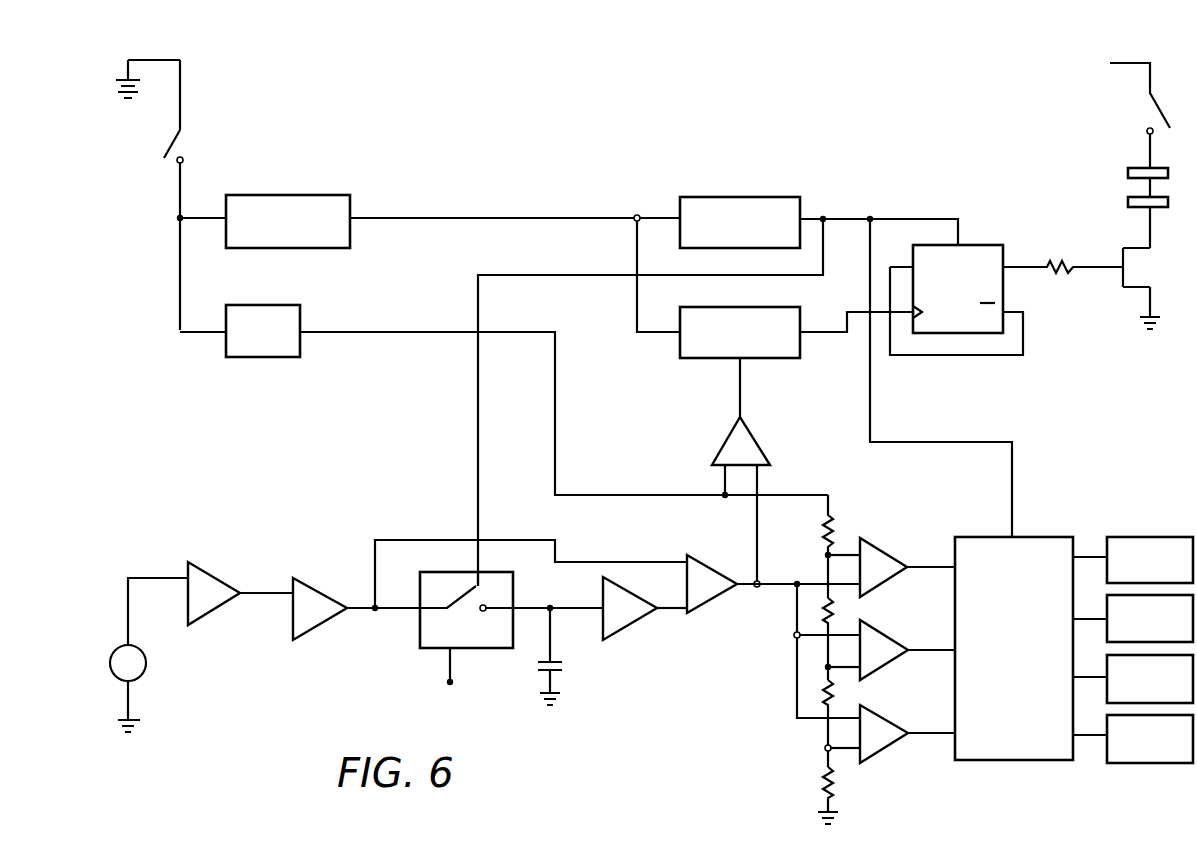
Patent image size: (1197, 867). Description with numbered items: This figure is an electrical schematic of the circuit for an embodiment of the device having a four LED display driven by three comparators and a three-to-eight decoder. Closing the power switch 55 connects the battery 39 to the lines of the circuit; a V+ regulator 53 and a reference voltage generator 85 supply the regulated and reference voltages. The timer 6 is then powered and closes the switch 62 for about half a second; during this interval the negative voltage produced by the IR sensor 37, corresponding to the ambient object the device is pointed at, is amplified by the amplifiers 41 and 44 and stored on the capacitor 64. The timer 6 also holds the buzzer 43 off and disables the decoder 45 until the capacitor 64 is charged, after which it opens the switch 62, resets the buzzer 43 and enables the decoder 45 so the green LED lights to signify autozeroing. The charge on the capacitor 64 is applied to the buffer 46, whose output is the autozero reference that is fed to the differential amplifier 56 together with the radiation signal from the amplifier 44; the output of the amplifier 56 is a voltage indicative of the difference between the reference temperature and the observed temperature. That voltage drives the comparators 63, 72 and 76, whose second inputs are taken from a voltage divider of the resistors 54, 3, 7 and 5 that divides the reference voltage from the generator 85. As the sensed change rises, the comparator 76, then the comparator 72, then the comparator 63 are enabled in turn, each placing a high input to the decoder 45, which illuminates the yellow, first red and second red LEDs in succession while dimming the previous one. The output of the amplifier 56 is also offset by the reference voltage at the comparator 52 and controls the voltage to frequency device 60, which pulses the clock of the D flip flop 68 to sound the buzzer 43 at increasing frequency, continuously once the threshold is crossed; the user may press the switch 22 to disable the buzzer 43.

The battery 39 is at (112, 100).
The power switch 55 is at (160, 143).
The V+ regulator 53 is at (313, 195).
The reference voltage generator 85 is at (283, 357).
The timer 6 is at (745, 196).
The voltage to frequency device 60 is at (780, 358).
The comparator 52 is at (768, 456).
The D flip flop 68 is at (973, 244).
The switch 22 is at (1152, 106).
The buzzer 43 is at (1123, 186).
The sensor 37 is at (137, 682).
The amplifier 41 is at (216, 578).
The amplifier 44 is at (318, 591).
The switch 62 is at (461, 602).
The capacitor 64 is at (570, 665).
The buffer 46 is at (630, 626).
The differential amplifier 56 is at (714, 568).
The resistor 54 is at (823, 527).
The resistor 3 is at (823, 613).
The resistor 7 is at (823, 693).
The resistor 5 is at (823, 791).
The comparator 63 is at (893, 558).
The comparator 72 is at (888, 637).
The comparator 76 is at (888, 717).
The 3 to 8 decoder 45 is at (1032, 537).